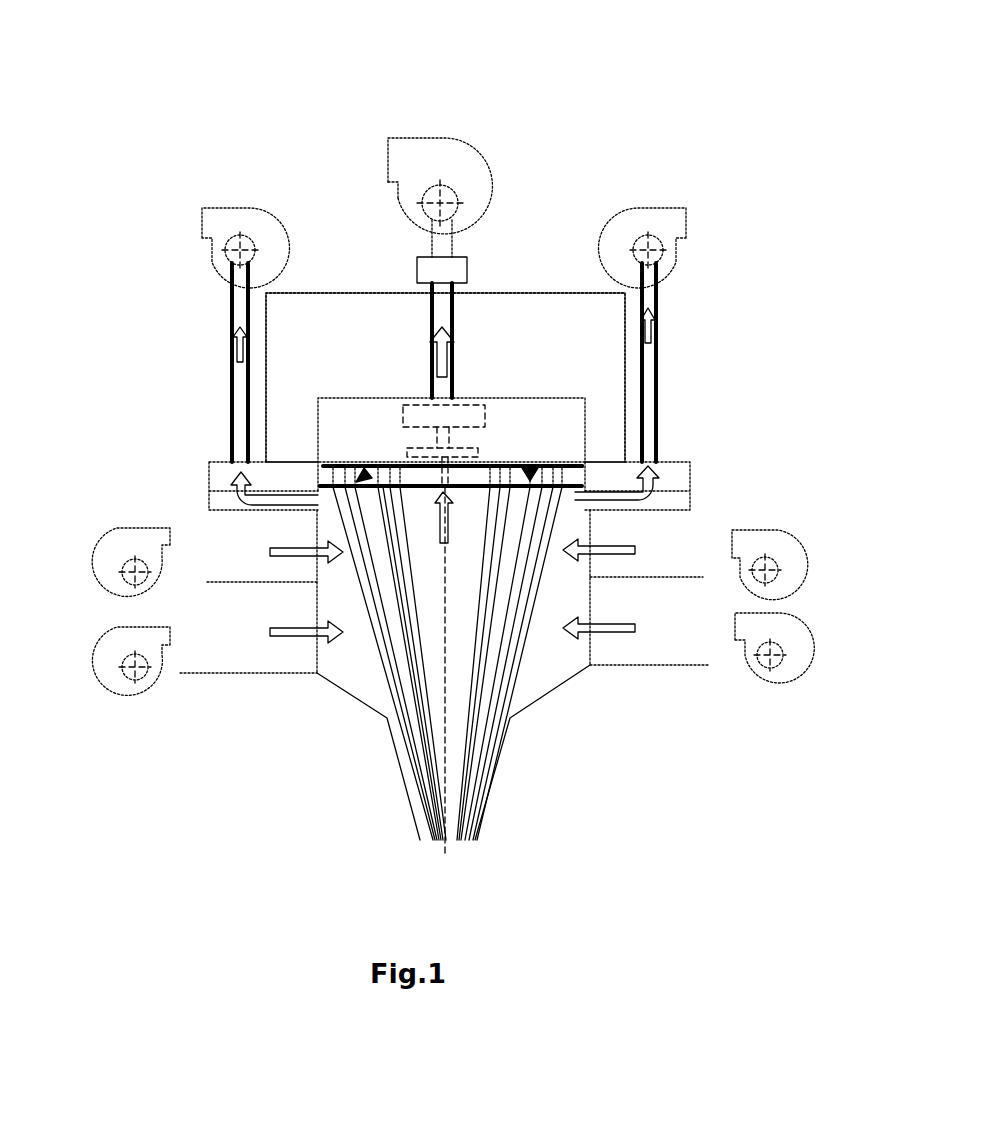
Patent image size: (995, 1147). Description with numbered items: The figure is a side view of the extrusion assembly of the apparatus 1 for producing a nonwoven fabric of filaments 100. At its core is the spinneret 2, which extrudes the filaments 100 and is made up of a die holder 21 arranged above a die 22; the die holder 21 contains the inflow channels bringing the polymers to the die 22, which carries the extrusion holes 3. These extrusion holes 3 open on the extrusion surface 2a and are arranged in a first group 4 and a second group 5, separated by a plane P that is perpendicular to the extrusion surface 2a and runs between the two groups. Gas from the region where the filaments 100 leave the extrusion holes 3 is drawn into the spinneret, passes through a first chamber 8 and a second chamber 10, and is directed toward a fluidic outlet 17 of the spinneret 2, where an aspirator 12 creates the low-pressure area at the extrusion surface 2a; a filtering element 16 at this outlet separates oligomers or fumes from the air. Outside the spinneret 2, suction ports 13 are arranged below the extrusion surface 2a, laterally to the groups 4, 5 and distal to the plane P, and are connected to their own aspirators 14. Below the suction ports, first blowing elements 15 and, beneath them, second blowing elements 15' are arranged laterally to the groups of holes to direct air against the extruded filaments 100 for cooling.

The apparatus 1 is at (549, 143).
The spinneret 2 is at (602, 323).
The extrusion surface 2a is at (465, 487).
The extrusion holes 3 is at (318, 463).
The first group of extrusion holes 4 is at (360, 470).
The second group of extrusion holes 5 is at (528, 470).
The first chamber 8 is at (423, 452).
The second chamber 10 is at (418, 417).
The aspirator 12 is at (442, 168).
The suction ports 13 is at (217, 502).
The aspirators 14 is at (215, 228).
The first blowing elements 15 is at (449, 671).
The second blowing elements 15' is at (451, 709).
The filtering elements 16 is at (415, 270).
The fluidic outlet 17 is at (453, 287).
The die holder 21 is at (558, 440).
The die 22 is at (575, 460).
The filaments 100 is at (503, 687).
The plane P is at (448, 750).